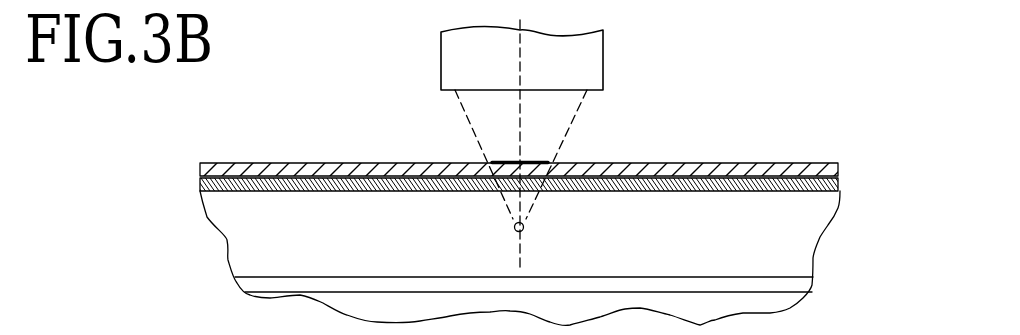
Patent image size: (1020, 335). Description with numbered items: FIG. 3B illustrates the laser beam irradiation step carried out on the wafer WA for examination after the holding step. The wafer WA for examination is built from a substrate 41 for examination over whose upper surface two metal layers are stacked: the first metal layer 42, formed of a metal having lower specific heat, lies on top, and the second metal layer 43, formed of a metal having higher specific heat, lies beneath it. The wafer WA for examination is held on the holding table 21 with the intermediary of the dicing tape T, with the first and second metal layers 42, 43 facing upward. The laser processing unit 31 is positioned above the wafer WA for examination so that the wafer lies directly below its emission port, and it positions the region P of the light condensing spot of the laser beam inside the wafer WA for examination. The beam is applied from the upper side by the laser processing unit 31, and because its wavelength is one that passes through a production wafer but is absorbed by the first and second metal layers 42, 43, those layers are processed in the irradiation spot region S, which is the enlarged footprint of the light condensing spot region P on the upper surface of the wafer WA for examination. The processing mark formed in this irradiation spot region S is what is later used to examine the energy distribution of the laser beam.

The laser processing unit 31 is at (595, 65).
The irradiation spot region S is at (530, 160).
The region of a light condensing spot P is at (525, 224).
The wafer for examination WA is at (798, 140).
The first metal layer 42 is at (829, 166).
The second metal layer 43 is at (832, 184).
The substrate for examination 41 is at (549, 258).
The holding table 21 is at (713, 302).
The dicing tape T is at (752, 283).